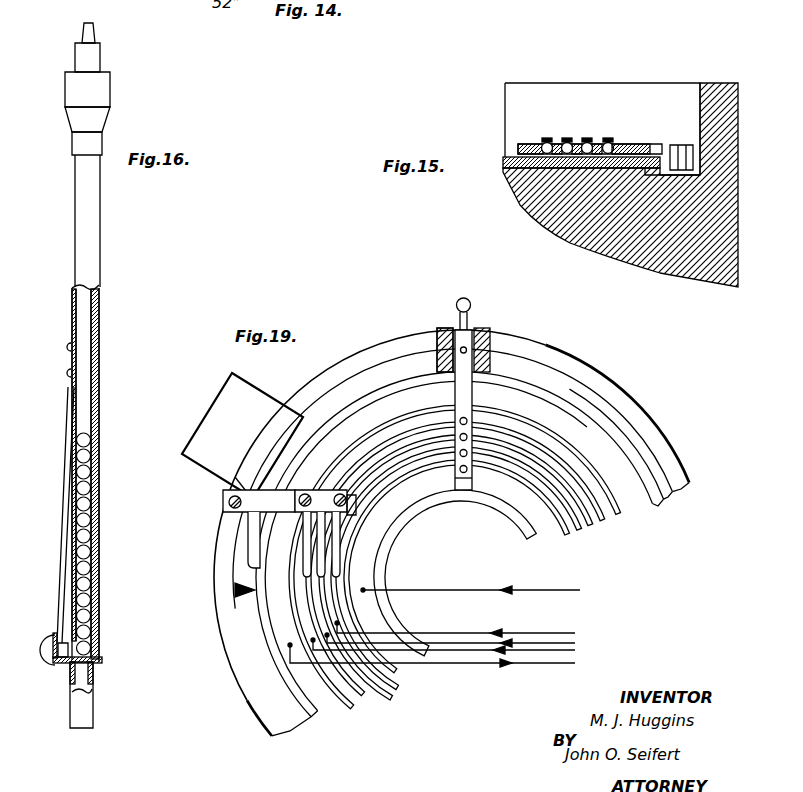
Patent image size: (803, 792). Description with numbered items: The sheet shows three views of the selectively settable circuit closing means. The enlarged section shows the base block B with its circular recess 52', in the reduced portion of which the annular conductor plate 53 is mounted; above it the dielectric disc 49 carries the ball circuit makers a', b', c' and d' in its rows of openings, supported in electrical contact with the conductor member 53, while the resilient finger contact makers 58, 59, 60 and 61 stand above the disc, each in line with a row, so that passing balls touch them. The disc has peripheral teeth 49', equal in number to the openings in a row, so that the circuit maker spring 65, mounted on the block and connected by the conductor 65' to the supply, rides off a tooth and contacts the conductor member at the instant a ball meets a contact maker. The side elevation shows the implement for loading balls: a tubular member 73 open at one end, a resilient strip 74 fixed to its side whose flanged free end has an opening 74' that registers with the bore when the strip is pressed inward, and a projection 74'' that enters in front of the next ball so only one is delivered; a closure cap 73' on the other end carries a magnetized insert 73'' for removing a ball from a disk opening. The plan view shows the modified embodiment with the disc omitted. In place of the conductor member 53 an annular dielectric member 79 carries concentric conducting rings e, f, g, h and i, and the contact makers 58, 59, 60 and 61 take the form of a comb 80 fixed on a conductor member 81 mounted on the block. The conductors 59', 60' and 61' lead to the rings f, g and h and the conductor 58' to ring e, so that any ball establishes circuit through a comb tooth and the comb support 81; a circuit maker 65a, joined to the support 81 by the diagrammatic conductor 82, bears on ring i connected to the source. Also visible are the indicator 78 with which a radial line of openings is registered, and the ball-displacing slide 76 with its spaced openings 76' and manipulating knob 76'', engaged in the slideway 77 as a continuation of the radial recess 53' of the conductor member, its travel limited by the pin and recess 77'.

In FIG. 16, the tubular member 73 is at (110, 430).
In FIG. 16, the closure cap 73' is at (114, 87).
In FIG. 16, the insert of permanently magnetized material 73'' is at (119, 37).
In FIG. 16, the strip of resilient material 74 is at (46, 493).
In FIG. 16, the opening in the strip flange 74' is at (60, 667).
In FIG. 16, the projection 74'' is at (33, 630).
In FIG. 15, the base block B is at (665, 282).
In FIG. 19, the base block B is at (682, 342).
In FIG. 15, the circular recess 52' is at (710, 113).
In FIG. 19, the circular recess 52' is at (621, 434).
In FIG. 15, the annular plate (conductor member) 53 is at (565, 139).
In FIG. 15, the dielectric disc 49 is at (585, 135).
In FIG. 15, the peripheral teeth 49' is at (638, 134).
In FIG. 15, the contact maker 58 is at (555, 130).
In FIG. 15, the contact maker 59 is at (574, 121).
In FIG. 15, the contact maker 60 is at (593, 131).
In FIG. 15, the contact maker 61 is at (614, 131).
In FIG. 15, the ball circuit maker a' is at (545, 112).
In FIG. 15, the ball circuit maker b' is at (596, 112).
In FIG. 15, the ball circuit maker c' is at (614, 112).
In FIG. 15, the ball circuit maker d' is at (628, 112).
In FIG. 15, the circuit maker spring 65 is at (672, 142).
In FIG. 19, the conductor 65' is at (437, 672).
In FIG. 19, the circuit maker 65a is at (248, 550).
In FIG. 19, the slide 76 is at (483, 391).
In FIG. 19, the openings 76' is at (486, 454).
In FIG. 19, the manipulating knob 76'' is at (472, 298).
In FIG. 19, the slideway 77 is at (494, 337).
In FIG. 19, the pin and recess 77' is at (430, 335).
In FIG. 19, the indicator 78 is at (235, 594).
In FIG. 19, the annular member of dielectric material 79 is at (375, 565).
In FIG. 19, the comb 80 is at (352, 515).
In FIG. 19, the conductor member (comb support) 81 is at (248, 530).
In FIG. 19, the conductor 82 is at (200, 440).
In FIG. 19, the radial recess 53' is at (474, 519).
In FIG. 19, the conductor 58' is at (493, 596).
In FIG. 19, the conductor 59' is at (491, 622).
In FIG. 19, the conductor 60' is at (486, 639).
In FIG. 19, the conductor 61' is at (473, 655).
In FIG. 19, the ring of electric conducting material e is at (396, 671).
In FIG. 19, the ring of electric conducting material f is at (398, 688).
In FIG. 19, the ring of electric conducting material g is at (392, 699).
In FIG. 19, the ring of electric conducting material h is at (363, 696).
In FIG. 19, the ring of electric conducting material i is at (352, 708).